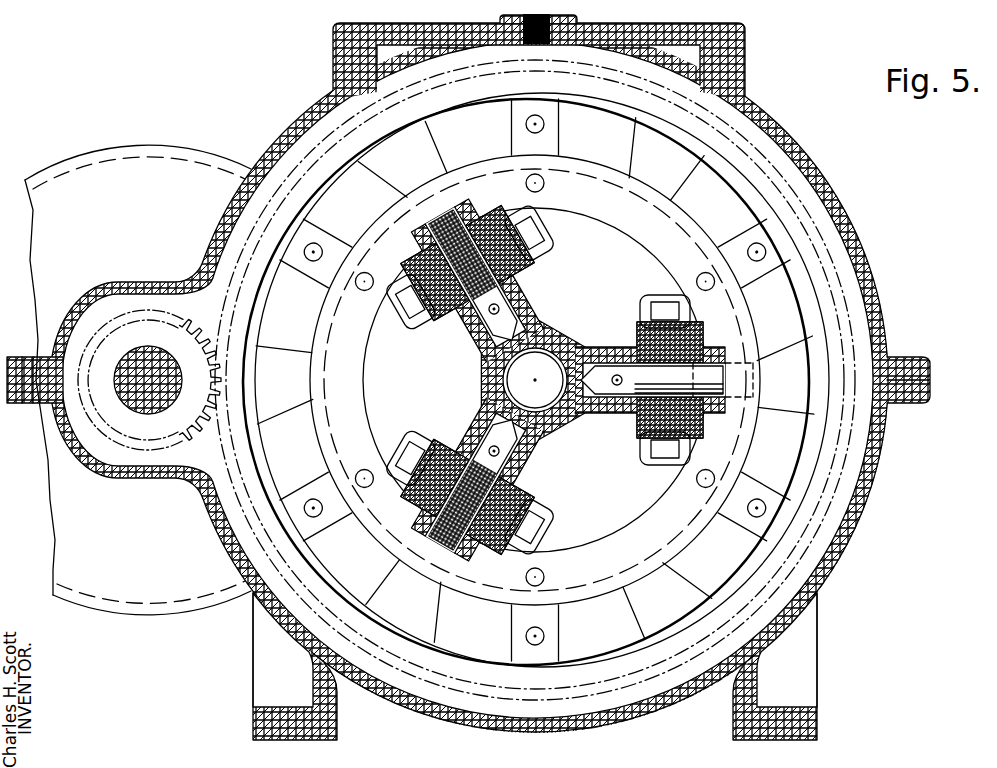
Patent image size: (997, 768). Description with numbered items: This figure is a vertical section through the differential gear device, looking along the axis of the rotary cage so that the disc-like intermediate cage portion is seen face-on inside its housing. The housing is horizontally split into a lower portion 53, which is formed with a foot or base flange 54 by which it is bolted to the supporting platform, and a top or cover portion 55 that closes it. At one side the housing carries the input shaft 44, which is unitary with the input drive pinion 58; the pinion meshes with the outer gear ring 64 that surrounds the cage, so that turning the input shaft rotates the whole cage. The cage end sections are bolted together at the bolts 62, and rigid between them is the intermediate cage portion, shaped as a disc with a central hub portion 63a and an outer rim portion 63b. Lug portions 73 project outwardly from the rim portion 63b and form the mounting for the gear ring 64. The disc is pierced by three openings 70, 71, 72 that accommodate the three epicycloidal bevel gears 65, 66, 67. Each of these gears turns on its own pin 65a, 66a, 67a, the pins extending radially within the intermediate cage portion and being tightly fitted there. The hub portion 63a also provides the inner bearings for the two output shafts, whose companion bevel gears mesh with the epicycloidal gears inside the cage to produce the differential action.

The input shaft 44 is at (126, 405).
The lower portion 53 is at (856, 529).
The foot or base flange 54 is at (253, 722).
The top or cover portion 55 is at (843, 204).
The input drive pinion 58 is at (210, 340).
The bolts 62 is at (545, 185).
The hub portion 63a is at (473, 383).
The rim portion 63b is at (648, 244).
The gear ring 64 is at (213, 423).
The epicycloidal bevel gear 65 is at (505, 229).
The pin 65a is at (512, 284).
The epicycloidal bevel gear 66 is at (690, 455).
The pin 66a is at (627, 370).
The epicycloidal bevel gear 67 is at (520, 535).
The pin 67a is at (510, 468).
The opening 70 is at (527, 248).
The opening 71 is at (660, 445).
The opening 72 is at (527, 507).
The lug portions 73 is at (560, 125).